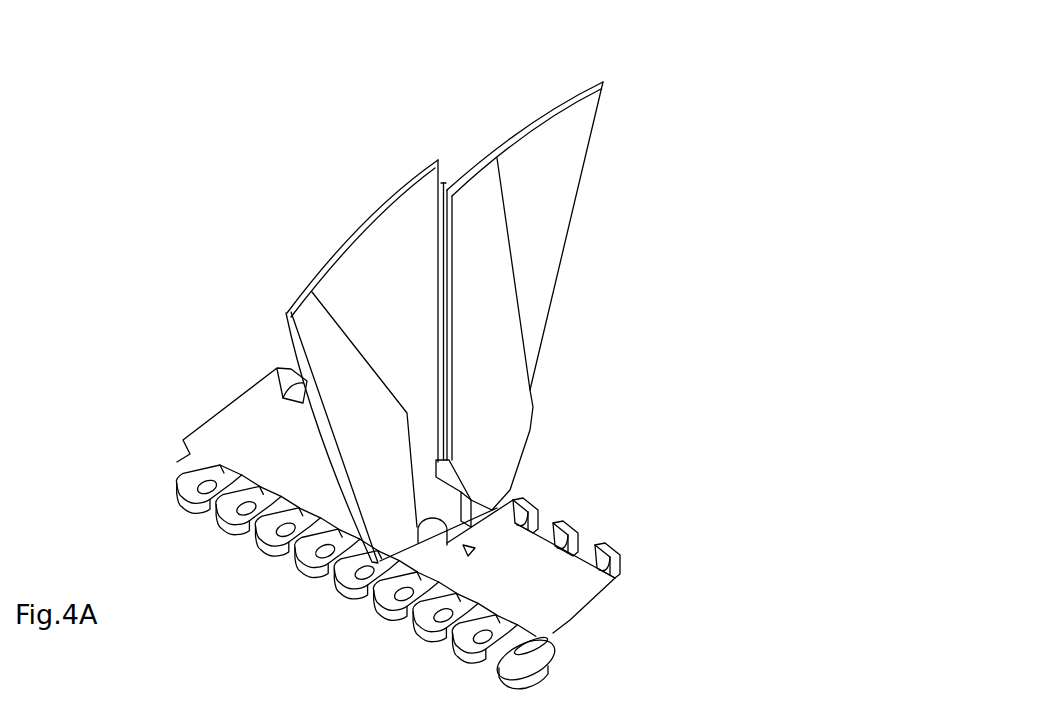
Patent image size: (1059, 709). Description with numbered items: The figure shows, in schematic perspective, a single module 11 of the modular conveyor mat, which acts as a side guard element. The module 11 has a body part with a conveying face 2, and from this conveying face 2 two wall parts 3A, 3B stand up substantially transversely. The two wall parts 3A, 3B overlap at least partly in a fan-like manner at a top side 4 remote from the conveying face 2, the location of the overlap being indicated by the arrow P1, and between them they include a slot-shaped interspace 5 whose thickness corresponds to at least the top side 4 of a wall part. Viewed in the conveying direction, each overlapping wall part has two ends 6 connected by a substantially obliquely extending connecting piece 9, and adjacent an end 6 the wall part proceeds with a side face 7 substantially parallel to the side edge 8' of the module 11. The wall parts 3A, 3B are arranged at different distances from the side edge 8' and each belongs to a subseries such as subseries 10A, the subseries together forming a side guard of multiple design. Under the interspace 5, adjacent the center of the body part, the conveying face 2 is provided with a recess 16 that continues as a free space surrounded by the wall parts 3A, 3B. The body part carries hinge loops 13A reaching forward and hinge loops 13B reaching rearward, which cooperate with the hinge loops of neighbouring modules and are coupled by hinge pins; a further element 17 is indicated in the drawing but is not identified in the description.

The module 11 is at (92, 88).
The top side 4 is at (392, 195).
The arrow P1 is at (418, 143).
The slot-shaped interspace 5 is at (444, 183).
The side face 7 is at (476, 186).
The connecting piece 9 is at (531, 147).
The end 6 is at (585, 128).
The wall part 3A is at (542, 247).
The wall part 3B is at (300, 316).
The conveying face 2 is at (197, 437).
The hinge loops 13B is at (553, 531).
The side edge 8' is at (554, 558).
The hinge loops 13A is at (297, 560).
The hinge eye 17 is at (350, 562).
The recess 16 is at (428, 534).
The subseries of wall parts 10A is at (426, 538).